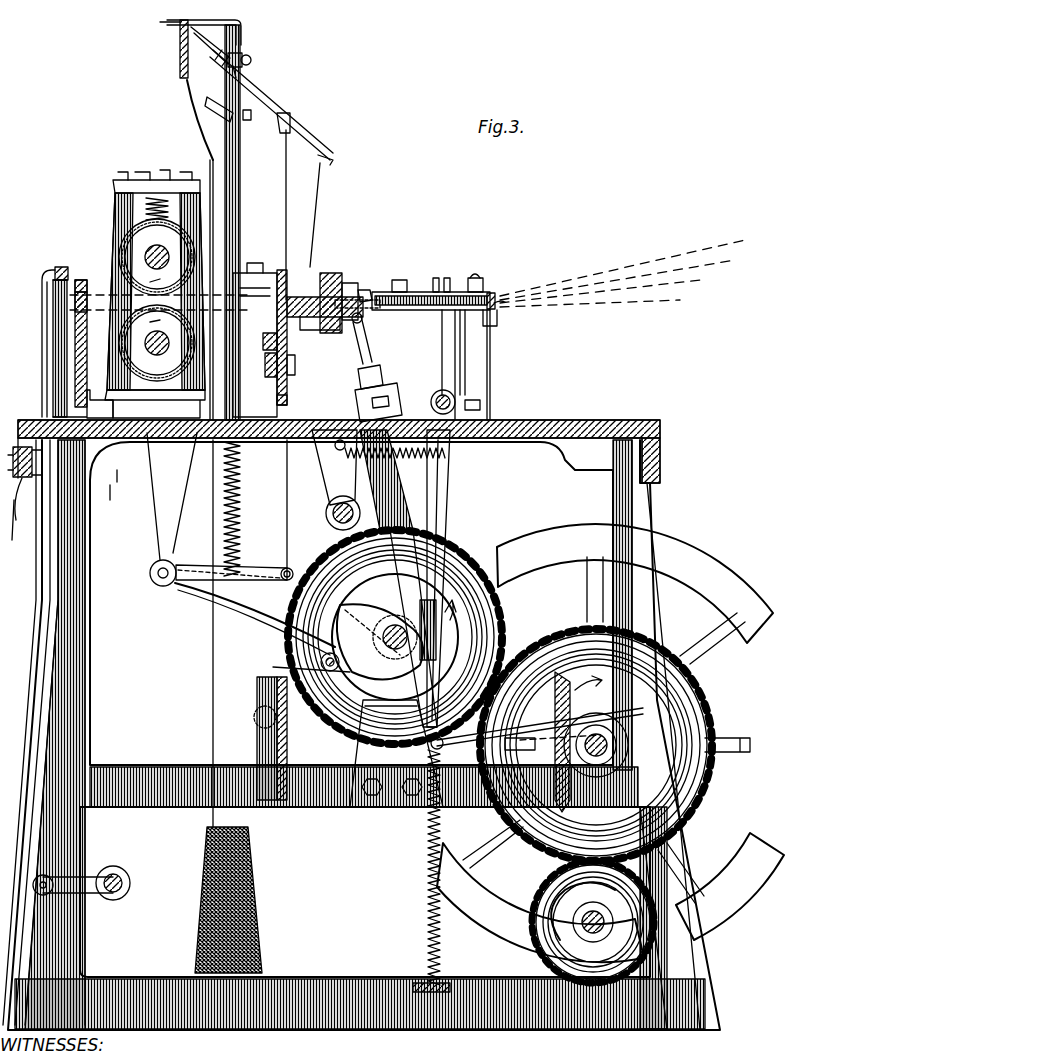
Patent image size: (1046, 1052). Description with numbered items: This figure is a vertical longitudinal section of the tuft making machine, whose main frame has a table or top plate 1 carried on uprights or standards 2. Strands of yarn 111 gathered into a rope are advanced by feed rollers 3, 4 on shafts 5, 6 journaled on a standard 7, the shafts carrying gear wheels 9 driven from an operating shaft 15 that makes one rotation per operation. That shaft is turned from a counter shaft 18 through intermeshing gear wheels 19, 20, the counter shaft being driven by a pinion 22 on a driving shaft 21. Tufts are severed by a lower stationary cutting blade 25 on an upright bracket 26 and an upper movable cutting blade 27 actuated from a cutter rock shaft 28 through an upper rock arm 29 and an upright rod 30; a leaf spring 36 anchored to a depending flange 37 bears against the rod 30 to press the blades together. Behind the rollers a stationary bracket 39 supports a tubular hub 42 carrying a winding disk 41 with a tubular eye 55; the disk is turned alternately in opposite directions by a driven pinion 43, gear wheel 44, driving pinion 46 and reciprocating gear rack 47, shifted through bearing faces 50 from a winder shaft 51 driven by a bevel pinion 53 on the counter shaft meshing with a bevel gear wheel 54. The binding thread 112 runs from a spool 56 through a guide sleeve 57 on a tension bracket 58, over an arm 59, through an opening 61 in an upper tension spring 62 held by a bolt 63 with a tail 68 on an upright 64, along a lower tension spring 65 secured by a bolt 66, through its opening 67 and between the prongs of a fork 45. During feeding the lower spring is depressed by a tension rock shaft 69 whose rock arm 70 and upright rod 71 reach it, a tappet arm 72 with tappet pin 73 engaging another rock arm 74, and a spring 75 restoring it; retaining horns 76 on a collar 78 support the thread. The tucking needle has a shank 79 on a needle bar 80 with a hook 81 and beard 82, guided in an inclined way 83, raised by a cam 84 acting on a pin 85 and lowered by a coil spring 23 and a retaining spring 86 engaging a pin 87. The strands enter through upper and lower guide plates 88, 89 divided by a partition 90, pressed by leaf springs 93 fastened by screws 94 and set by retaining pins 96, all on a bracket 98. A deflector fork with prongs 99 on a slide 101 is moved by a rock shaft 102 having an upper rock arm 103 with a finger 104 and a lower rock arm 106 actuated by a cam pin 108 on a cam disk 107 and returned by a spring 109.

The table or top plate 1 is at (578, 418).
The uprights or standards 2 is at (95, 748).
The feed roller 3 is at (157, 257).
The feed roller 4 is at (157, 343).
The shaft 5 is at (167, 258).
The shaft 6 is at (167, 347).
The standard 7 is at (113, 212).
The gear wheel 9 is at (18, 478).
The operating shaft 15 is at (394, 645).
The counter shaft 18 is at (600, 735).
The gear wheel 19 is at (700, 700).
The gear wheel 20 is at (499, 598).
The driving shaft 21 is at (590, 940).
The pinion 22 is at (540, 960).
The coil spring 23 is at (428, 948).
The lower stationary cutting blade 25 is at (55, 362).
The upright bracket 26 is at (88, 340).
The upper movable cutting blade 27 is at (62, 267).
The cutter rock shaft 28 is at (130, 885).
The upper rock arm 29 is at (95, 893).
The upright rod 30 is at (45, 697).
The leaf spring 36 is at (35, 485).
The depending flange 37 is at (14, 540).
The stationary bracket 39 is at (255, 340).
The winding disk 41 is at (318, 332).
The tubular hub 42 is at (300, 296).
The driven pinion 43 is at (282, 272).
The gear wheel 44 is at (288, 395).
The fork 45 is at (291, 118).
The driving pinion 46 is at (265, 372).
The gear rack 47 is at (263, 340).
The bearing faces 50 is at (257, 715).
The winder shaft 51 is at (520, 752).
The bevel pinion 53 is at (618, 760).
The bevel gear wheel 54 is at (566, 808).
The eye 55 is at (365, 288).
The spool or bobbin 56 is at (262, 940).
The guide sleeve 57 is at (180, 57).
The tension bracket 58 is at (242, 24).
The arm 59 is at (165, 23).
The opening 61 is at (240, 74).
The upper tension spring 62 is at (268, 104).
The bolt 63 is at (252, 60).
The upright 64 is at (240, 192).
The lower tension spring 65 is at (330, 164).
The bolt 66 is at (247, 120).
The opening 67 is at (333, 158).
The tail 68 is at (210, 45).
The tension rock shaft 69 is at (150, 577).
The rock arm 70 is at (182, 585).
The upright rod 71 is at (287, 494).
The tappet arm 72 is at (374, 753).
The tappet pin 73 is at (301, 658).
The rock arm 74 is at (262, 605).
The spring 75 is at (238, 530).
The retaining horn 76 is at (355, 282).
The collar 78 is at (333, 272).
The needle shank 79 is at (383, 378).
The needle bar 80 is at (413, 615).
The bill or hook 81 is at (372, 310).
The guard or beard 82 is at (355, 328).
The inclined way 83 is at (362, 480).
The cam 84 is at (380, 641).
The pin 85 is at (398, 598).
The retaining spring 86 is at (552, 698).
The pin 87 is at (430, 743).
The upper guide plate 88 is at (494, 293).
The lower guide plate 89 is at (501, 328).
The partition 90 is at (498, 305).
The leaf spring 93 is at (473, 352).
The screw 94 is at (478, 276).
The retaining pin 96 is at (425, 311).
The bracket 98 is at (490, 380).
The prongs 99 is at (395, 280).
The slide 101 is at (448, 278).
The rock shaft 102 is at (455, 410).
The upper rock arm 103 is at (442, 364).
The finger 104 is at (436, 278).
The lower rock arm 106 is at (446, 512).
The cam disk 107 is at (446, 630).
The cam pin 108 is at (360, 585).
The spring 109 is at (450, 458).
The strands of yarn 111 is at (650, 258).
The binding thread 112 is at (200, 102).